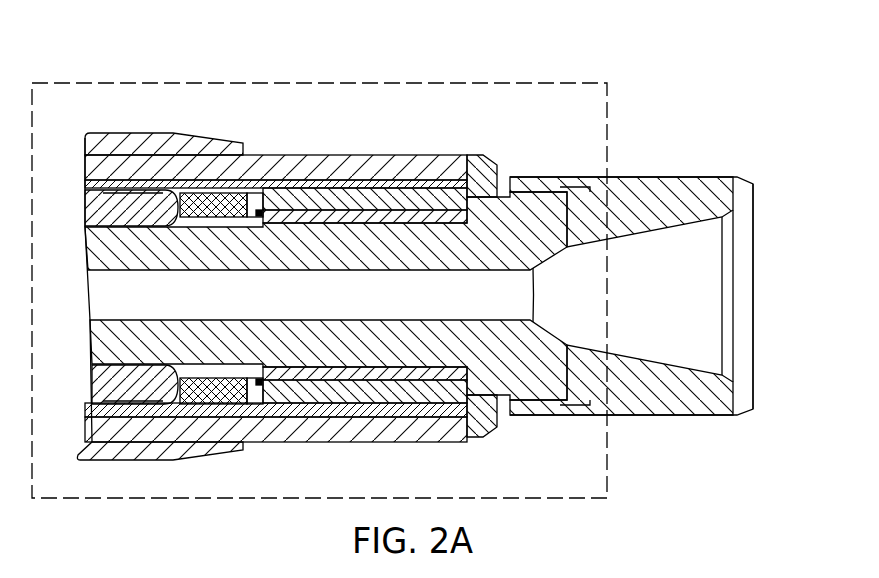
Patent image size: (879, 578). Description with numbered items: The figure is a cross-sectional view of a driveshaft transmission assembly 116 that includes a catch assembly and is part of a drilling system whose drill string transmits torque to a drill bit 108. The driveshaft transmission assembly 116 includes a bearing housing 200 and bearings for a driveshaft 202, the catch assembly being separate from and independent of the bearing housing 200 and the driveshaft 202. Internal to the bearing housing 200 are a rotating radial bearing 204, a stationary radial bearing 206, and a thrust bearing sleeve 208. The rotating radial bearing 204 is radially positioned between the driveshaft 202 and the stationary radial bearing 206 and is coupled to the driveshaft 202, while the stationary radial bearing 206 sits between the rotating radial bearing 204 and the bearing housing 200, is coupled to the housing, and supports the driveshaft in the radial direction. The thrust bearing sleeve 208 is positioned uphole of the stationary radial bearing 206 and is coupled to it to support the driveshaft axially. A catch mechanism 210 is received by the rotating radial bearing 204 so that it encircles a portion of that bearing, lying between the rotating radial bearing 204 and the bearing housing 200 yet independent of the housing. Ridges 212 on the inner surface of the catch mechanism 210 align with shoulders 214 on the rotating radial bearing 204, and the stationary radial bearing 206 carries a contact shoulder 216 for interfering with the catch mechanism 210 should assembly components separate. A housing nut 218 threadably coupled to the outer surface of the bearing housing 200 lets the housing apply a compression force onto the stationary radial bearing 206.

The drill bit 108 is at (753, 300).
The driveshaft transmission assembly 116 is at (281, 81).
The bearing housing 200 is at (248, 182).
The driveshaft 202 is at (673, 188).
The rotating radial bearing 204 is at (457, 223).
The stationary radial bearing 206 is at (393, 193).
The thrust bearing sleeve 208 is at (140, 178).
The catch mechanism 210 is at (187, 200).
The ridges 212 is at (263, 200).
The shoulders 214 is at (197, 213).
The contact shoulder 216 is at (290, 176).
The housing nut 218 is at (485, 155).